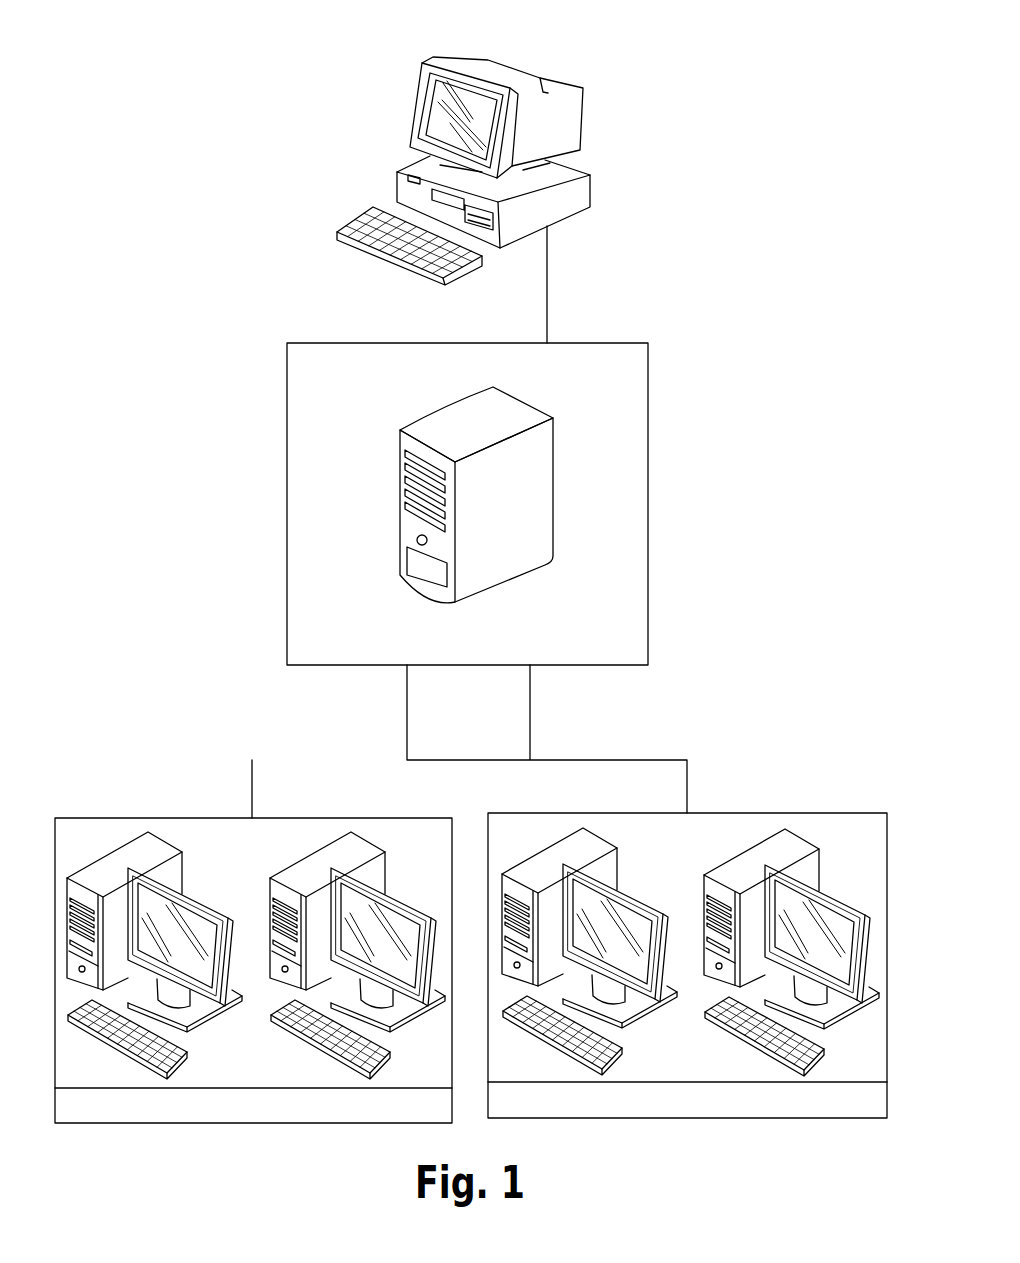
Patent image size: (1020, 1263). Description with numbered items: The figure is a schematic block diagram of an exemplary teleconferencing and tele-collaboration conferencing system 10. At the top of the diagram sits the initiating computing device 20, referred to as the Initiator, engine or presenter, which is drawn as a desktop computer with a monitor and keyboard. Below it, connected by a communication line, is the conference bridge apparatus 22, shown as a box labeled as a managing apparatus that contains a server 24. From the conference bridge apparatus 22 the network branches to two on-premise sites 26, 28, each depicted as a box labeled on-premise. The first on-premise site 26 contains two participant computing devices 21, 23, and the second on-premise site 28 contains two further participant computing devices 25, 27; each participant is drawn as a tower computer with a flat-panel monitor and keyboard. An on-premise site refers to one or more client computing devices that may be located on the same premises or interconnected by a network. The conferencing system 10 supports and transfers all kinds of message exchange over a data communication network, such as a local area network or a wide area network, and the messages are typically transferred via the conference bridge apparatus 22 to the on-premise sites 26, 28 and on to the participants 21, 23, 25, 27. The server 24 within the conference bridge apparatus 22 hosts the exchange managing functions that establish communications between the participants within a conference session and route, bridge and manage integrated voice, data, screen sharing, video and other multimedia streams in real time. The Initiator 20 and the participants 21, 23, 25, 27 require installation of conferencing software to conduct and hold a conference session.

The conferencing system 10 is at (755, 110).
The initiating computing device 20 is at (400, 133).
The computing device 21 is at (174, 848).
The conference bridge apparatus 22 is at (530, 495).
The computing device 23 is at (377, 848).
The server 24 is at (553, 495).
The computing device 25 is at (609, 845).
The on-premise site 26 is at (253, 944).
The computing device 27 is at (818, 855).
The on-premise site 28 is at (687, 936).